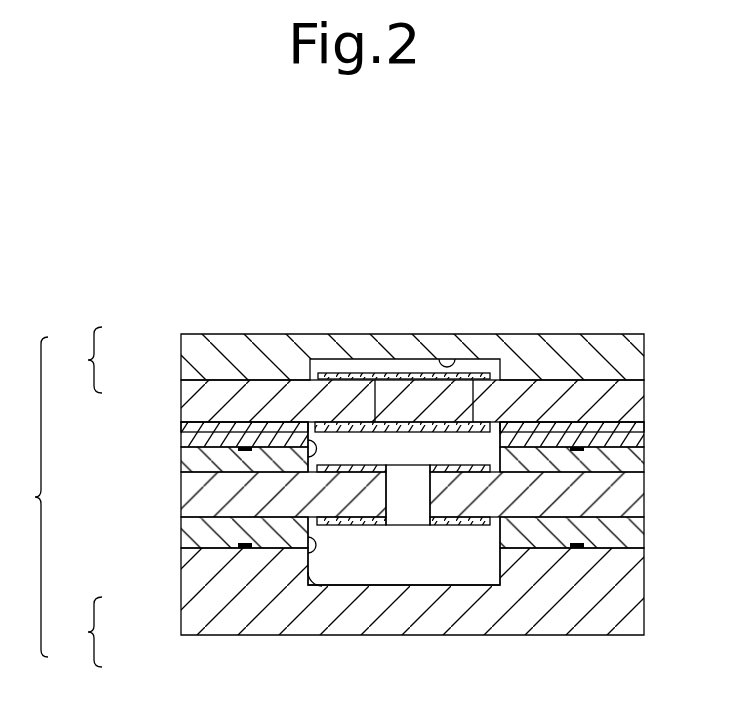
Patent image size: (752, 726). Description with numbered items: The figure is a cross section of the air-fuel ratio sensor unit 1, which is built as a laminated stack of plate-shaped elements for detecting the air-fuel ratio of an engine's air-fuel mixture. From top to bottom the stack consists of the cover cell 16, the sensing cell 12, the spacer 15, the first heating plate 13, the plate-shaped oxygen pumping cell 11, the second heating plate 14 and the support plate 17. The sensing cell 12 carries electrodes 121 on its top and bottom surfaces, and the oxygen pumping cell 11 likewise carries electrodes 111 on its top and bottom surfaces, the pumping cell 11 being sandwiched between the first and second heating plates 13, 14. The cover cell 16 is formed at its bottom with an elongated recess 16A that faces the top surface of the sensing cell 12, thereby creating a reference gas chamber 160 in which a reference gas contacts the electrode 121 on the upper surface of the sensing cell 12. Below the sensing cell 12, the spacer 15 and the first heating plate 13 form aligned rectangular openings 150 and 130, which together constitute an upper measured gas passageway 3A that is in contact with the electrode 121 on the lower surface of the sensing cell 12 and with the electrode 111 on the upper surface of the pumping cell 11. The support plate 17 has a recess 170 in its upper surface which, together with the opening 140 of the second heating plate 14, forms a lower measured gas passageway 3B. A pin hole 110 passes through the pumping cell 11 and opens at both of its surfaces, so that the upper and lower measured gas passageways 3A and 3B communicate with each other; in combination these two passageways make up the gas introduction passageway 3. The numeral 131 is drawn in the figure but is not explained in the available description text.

The sensor unit 1 is at (385, 250).
The gas introduction passageway 3 is at (28, 511).
The upper measured gas passageway 3A is at (85, 373).
The lower measured gas passageway 3B is at (77, 632).
The oxygen pumping cell 11 is at (638, 498).
The sensing cell 12 is at (636, 401).
The first heating plate 13 is at (638, 463).
The second heating plate 14 is at (638, 545).
The spacer 15 is at (638, 442).
The cover cell 16 is at (636, 357).
The elongated recess 16A is at (454, 358).
The support plate 17 is at (632, 596).
The pin hole 110 is at (410, 488).
The electrodes 111 is at (358, 526).
The electrodes 121 is at (372, 380).
The opening 130 is at (315, 427).
The upper cavity 131 is at (308, 441).
The opening 140 is at (308, 548).
The opening 150 is at (312, 421).
The reference gas chamber 160 is at (408, 367).
The recess 170 is at (310, 573).